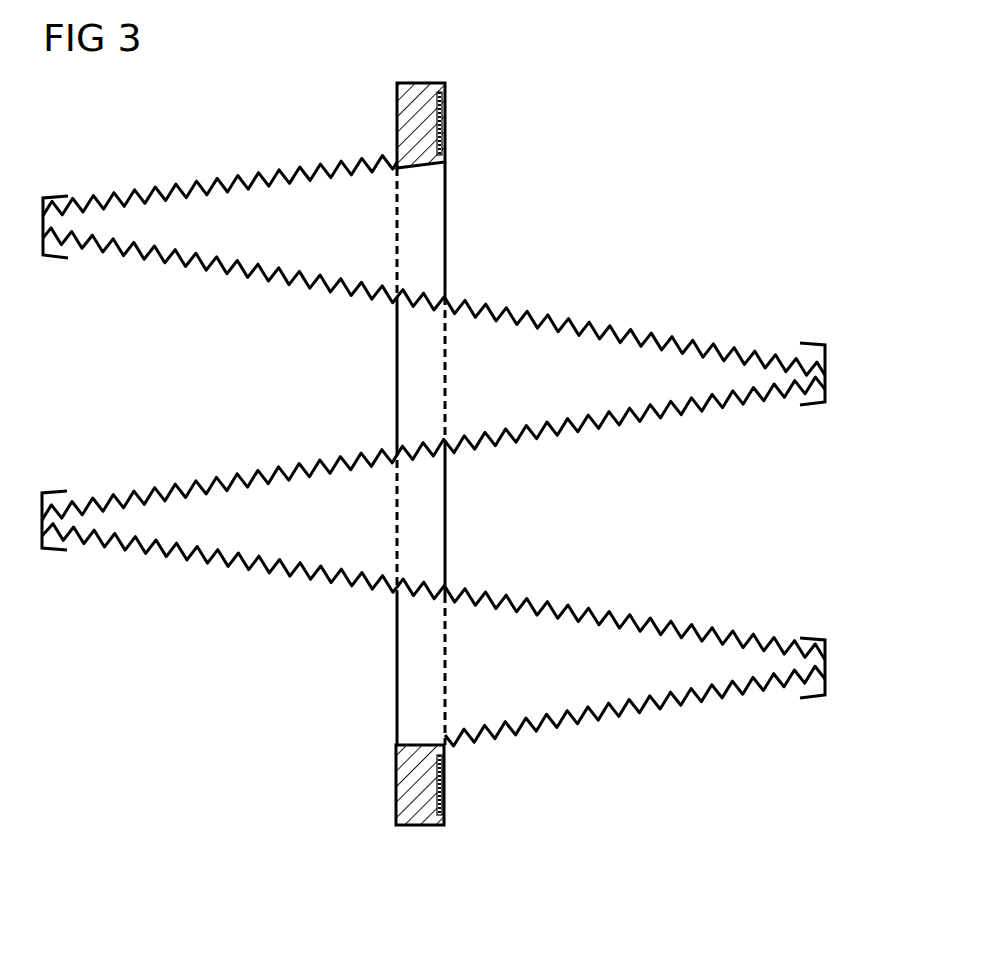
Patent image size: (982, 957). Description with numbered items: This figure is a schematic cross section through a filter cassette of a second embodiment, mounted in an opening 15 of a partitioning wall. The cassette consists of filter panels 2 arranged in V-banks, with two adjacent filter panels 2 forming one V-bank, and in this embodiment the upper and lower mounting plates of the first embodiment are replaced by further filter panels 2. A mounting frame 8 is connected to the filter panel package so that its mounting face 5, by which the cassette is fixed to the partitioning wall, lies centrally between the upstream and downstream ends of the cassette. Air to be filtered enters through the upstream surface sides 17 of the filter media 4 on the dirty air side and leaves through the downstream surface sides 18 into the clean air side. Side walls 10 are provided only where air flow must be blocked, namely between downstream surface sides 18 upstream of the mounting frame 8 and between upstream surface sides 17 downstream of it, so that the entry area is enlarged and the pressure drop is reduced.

The filter panel 2 is at (335, 178).
The filter media 4 is at (433, 469).
The mounting face 5 is at (448, 118).
The mounting frame 8 is at (423, 96).
The side wall 10 is at (433, 458).
The opening 15 is at (493, 393).
The upstream surface side 17 is at (248, 314).
The downstream surface side 18 is at (643, 472).